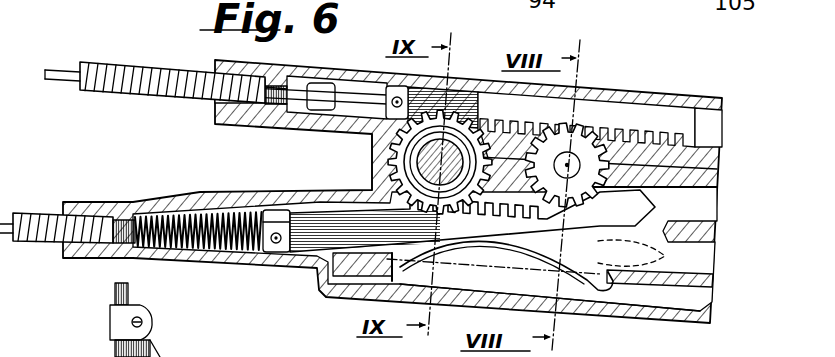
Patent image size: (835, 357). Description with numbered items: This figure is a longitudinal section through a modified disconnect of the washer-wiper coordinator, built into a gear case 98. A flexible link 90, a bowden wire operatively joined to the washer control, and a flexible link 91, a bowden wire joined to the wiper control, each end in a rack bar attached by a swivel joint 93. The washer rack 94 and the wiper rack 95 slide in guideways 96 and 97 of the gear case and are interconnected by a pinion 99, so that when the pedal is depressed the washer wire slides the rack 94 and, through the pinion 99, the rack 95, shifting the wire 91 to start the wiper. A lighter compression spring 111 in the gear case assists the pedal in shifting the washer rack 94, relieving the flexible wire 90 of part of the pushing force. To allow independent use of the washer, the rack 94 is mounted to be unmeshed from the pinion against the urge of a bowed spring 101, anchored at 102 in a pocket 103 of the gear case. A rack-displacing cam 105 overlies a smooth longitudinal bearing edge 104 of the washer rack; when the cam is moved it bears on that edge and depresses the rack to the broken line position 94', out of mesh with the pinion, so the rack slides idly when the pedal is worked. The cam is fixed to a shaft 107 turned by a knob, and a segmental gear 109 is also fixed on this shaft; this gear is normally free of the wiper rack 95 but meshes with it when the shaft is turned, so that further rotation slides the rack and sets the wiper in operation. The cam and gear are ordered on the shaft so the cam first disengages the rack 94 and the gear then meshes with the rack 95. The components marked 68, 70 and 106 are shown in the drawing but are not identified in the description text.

The valve body 68 is at (153, 320).
The valve stem 70 is at (200, 348).
The flexible link 90 is at (1, 213).
The flexible link 91 is at (59, 67).
The swivel joint 93 is at (392, 86).
The washer rack 94 is at (472, 221).
The broken line position of washer rack 94' is at (649, 258).
The wiper rack 95 is at (637, 139).
The guideway 96 is at (703, 203).
The guideway 97 is at (708, 129).
The gear case 98 is at (489, 80).
The pinion 99 is at (580, 135).
The bowed spring 101 is at (545, 250).
The anchor 102 is at (350, 284).
The pocket 103 is at (486, 277).
The bearing edge 104 is at (323, 202).
The rack-displacing cam 105 is at (388, 156).
The partition wall 106 is at (705, 271).
The shaft 107 is at (443, 158).
The segmental gear 109 is at (493, 130).
The compression spring 111 is at (188, 222).